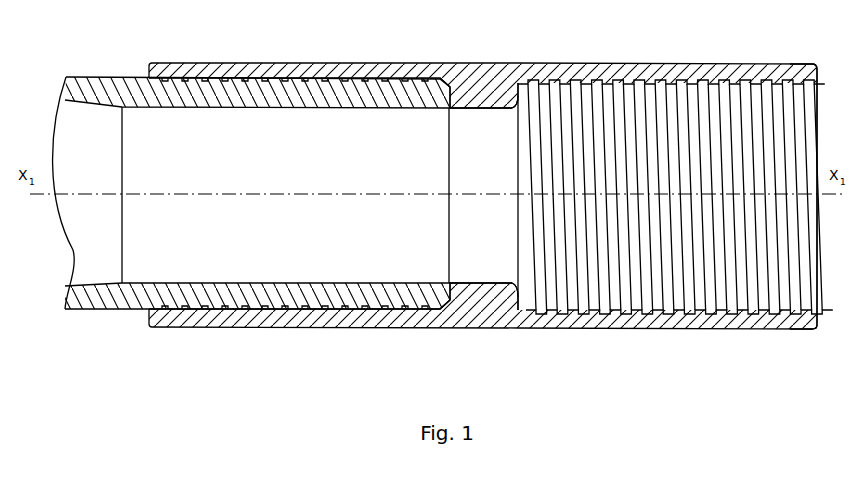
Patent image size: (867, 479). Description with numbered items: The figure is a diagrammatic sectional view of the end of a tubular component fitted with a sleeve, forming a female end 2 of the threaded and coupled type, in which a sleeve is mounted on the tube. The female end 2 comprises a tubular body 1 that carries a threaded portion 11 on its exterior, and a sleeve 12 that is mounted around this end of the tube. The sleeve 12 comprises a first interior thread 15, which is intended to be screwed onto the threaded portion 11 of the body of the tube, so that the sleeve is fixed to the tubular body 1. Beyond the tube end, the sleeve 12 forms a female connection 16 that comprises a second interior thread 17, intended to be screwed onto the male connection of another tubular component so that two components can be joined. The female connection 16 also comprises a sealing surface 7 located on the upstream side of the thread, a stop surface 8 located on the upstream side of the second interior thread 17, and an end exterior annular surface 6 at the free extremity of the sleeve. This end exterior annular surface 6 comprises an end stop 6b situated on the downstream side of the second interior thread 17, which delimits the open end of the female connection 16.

The tubular body 1 is at (100, 82).
The female end 2 is at (490, 201).
The threaded portion 11 is at (162, 76).
The first interior thread 15 is at (322, 63).
The sleeve 12 is at (465, 84).
The female connection 16 is at (570, 63).
The second interior thread 17 is at (706, 80).
The end stop 6b is at (818, 72).
The end exterior annular surface 6 is at (814, 330).
The sealing surface 7 is at (511, 293).
The stop surface 8 is at (513, 287).